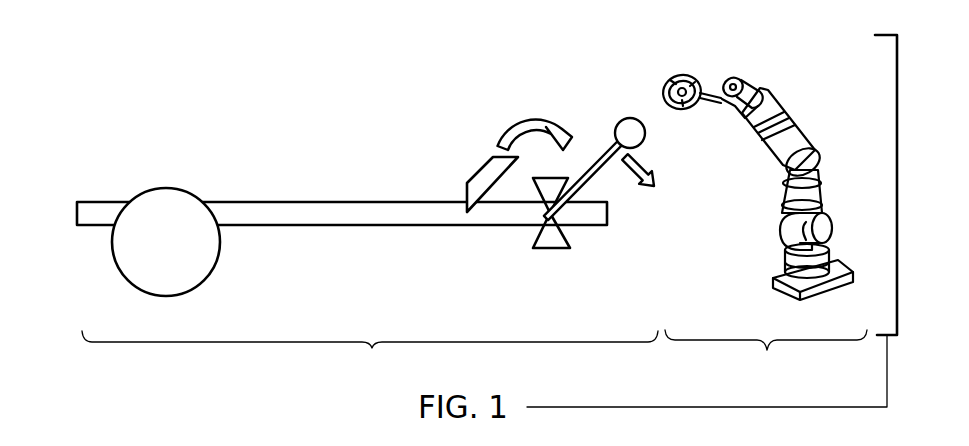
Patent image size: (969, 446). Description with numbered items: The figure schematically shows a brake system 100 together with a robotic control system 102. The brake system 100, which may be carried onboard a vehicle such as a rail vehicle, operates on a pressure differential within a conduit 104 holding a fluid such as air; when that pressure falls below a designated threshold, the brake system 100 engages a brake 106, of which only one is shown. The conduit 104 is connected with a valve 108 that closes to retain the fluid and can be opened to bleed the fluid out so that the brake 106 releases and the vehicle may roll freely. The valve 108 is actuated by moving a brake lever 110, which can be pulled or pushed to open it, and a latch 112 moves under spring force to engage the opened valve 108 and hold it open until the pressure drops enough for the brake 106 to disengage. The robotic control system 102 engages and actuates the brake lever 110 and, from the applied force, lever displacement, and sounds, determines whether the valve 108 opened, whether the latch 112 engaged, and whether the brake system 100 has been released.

The brake system 100 is at (370, 354).
The robotic control system 102 is at (763, 224).
The conduit 104 is at (395, 213).
The brake 106 is at (217, 267).
The valve 108 is at (550, 250).
The brake lever 110 is at (602, 172).
The latch 112 is at (477, 170).